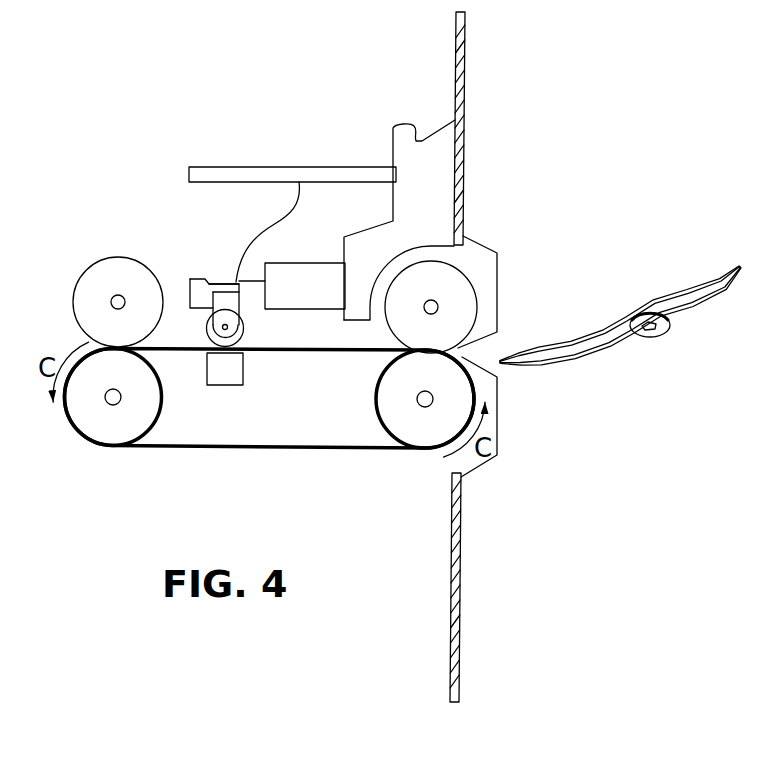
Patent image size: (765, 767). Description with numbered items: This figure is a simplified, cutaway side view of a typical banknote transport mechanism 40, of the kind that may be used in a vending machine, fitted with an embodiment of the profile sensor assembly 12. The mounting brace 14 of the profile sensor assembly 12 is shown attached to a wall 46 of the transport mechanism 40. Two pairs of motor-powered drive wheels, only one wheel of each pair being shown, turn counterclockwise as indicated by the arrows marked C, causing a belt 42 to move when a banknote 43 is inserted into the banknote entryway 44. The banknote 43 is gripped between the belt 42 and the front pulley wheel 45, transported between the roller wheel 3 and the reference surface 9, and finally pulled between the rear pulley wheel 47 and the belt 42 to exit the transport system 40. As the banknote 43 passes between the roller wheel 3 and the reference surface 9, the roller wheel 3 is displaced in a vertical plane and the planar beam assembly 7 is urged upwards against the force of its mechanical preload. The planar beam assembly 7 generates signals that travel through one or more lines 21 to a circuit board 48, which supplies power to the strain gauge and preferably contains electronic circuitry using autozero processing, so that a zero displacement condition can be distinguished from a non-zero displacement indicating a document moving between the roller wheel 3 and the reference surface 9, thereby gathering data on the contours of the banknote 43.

The banknote transport mechanism 40 is at (135, 80).
The wall 46 is at (443, 188).
The circuit board 48 is at (287, 165).
The lines 21 is at (270, 227).
The mounting brace 14 is at (320, 263).
The profile sensor assembly 12 is at (200, 263).
The planar beam assembly 7 is at (228, 281).
The roller wheel 3 is at (243, 330).
The reference surface 9 is at (243, 368).
The rear pulley wheel 47 is at (97, 283).
The front pulley wheel 45 is at (465, 300).
The belt 42 is at (275, 447).
The banknote entryway 44 is at (492, 348).
The banknote 43 is at (670, 288).